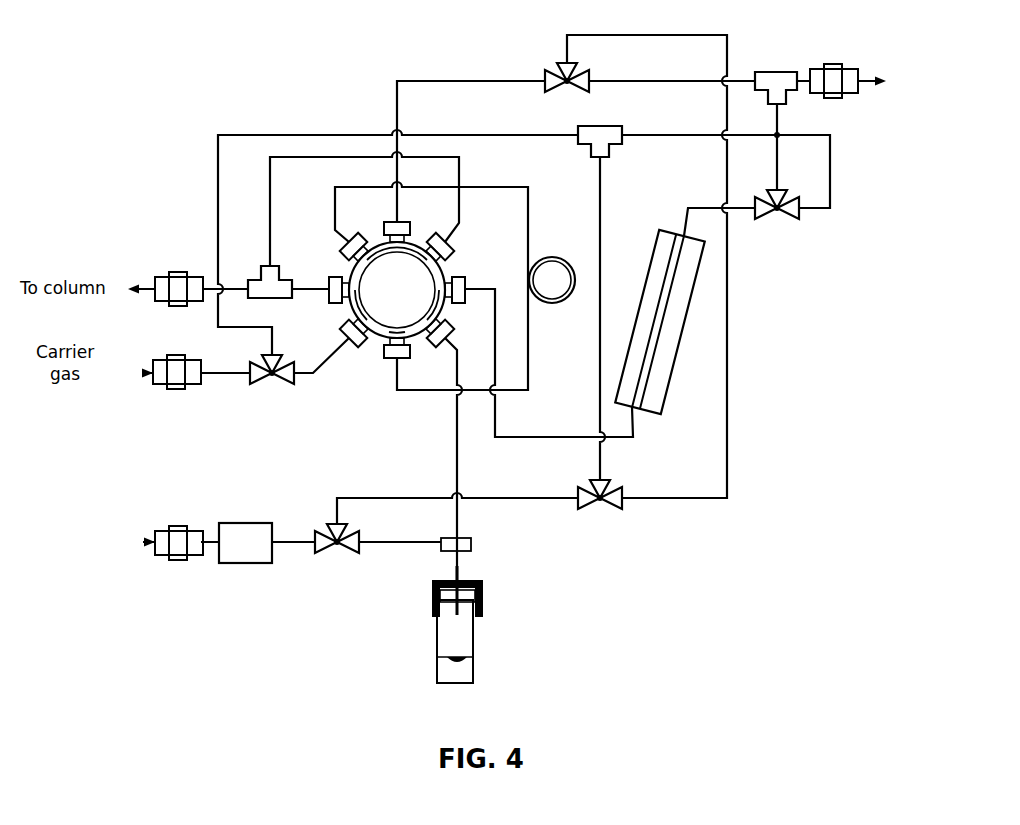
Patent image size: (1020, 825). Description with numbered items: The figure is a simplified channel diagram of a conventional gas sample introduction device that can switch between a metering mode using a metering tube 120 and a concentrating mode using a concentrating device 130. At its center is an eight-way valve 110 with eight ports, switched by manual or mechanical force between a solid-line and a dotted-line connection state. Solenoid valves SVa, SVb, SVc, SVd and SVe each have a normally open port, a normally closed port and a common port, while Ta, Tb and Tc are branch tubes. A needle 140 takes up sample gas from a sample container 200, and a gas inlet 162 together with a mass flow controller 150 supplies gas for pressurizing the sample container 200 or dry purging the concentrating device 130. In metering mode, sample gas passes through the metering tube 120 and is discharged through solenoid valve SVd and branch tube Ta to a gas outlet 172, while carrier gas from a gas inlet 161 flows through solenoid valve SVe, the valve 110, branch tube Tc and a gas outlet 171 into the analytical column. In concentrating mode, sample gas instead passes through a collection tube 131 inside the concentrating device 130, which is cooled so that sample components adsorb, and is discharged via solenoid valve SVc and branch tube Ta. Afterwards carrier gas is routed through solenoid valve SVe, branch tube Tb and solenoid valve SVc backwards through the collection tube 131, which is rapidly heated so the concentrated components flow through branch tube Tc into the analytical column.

The eight-way valve 110 is at (414, 299).
The metering tube 120 is at (560, 255).
The concentrating device 130 is at (680, 326).
The collection tube 131 is at (692, 330).
The needle 140 is at (459, 620).
The mass flow controller 150 is at (262, 554).
The gas inlet 161 is at (170, 389).
The gas inlet 162 is at (175, 560).
The gas outlet 171 is at (175, 277).
The gas outlet 172 is at (850, 99).
The sample container 200 is at (452, 624).
The solenoid valve SVa is at (343, 557).
The solenoid valve SVb is at (590, 513).
The solenoid valve SVc is at (772, 221).
The solenoid valve SVd is at (560, 68).
The solenoid valve SVe is at (265, 388).
The branch tube Ta is at (775, 70).
The branch tube Tb is at (615, 143).
The branch tube Tc is at (283, 263).